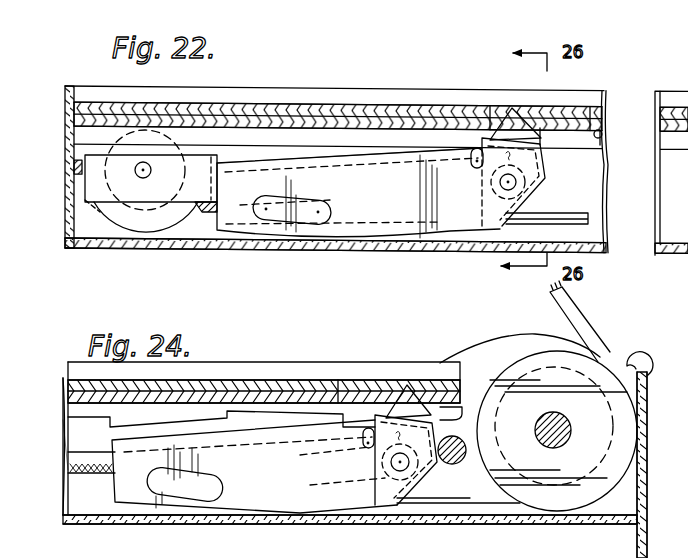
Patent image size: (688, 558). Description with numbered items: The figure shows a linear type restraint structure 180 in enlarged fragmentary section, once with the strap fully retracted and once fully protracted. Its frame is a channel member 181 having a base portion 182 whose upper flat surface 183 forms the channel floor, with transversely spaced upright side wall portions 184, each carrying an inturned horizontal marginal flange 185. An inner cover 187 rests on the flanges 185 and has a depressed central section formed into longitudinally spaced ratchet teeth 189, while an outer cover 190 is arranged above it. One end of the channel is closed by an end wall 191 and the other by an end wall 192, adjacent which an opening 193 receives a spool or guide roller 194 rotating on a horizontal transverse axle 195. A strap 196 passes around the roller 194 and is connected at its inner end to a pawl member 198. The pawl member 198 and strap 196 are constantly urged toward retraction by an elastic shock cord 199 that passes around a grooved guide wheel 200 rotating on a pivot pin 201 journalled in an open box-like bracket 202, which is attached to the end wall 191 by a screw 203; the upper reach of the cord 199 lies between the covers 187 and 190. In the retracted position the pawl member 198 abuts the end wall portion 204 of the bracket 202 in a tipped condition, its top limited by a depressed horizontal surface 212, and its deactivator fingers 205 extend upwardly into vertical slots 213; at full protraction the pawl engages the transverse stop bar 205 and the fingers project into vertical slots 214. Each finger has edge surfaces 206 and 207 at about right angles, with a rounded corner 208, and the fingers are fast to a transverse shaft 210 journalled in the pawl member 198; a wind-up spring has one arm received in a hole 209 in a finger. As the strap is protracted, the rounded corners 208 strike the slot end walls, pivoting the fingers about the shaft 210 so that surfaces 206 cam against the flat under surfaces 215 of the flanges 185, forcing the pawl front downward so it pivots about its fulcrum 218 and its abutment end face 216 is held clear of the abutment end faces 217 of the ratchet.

In FIG. 22, the linear type structure 180 is at (352, 85).
In FIG. 24, the linear type structure 180 is at (279, 361).
In FIG. 22, the channel member 181 is at (366, 250).
In FIG. 24, the channel member 181 is at (411, 527).
In FIG. 22, the base portion 182 is at (405, 248).
In FIG. 24, the base portion 182 is at (497, 526).
In FIG. 22, the upper flat surface 183 is at (239, 240).
In FIG. 24, the upper flat surface 183 is at (377, 516).
In FIG. 24, the side wall portion 184 is at (76, 500).
In FIG. 22, the inturned horizontal marginal flange 185 is at (438, 124).
In FIG. 24, the inturned horizontal marginal flange 185 is at (298, 403).
In FIG. 22, the inner cover 187 is at (384, 116).
In FIG. 24, the inner cover 187 is at (173, 396).
In FIG. 24, the ratchet teeth 189 is at (89, 438).
In FIG. 22, the outer cover 190 is at (277, 103).
In FIG. 24, the outer cover 190 is at (109, 380).
In FIG. 22, the end wall 191 is at (67, 244).
In FIG. 24, the end wall 192 is at (646, 437).
In FIG. 24, the opening 193 is at (470, 361).
In FIG. 24, the guide roller 194 is at (543, 507).
In FIG. 24, the axle 195 is at (553, 412).
In FIG. 22, the strap 196 is at (581, 213).
In FIG. 24, the strap 196 is at (575, 319).
In FIG. 22, the pawl member 198 is at (550, 174).
In FIG. 24, the pawl member 198 is at (430, 479).
In FIG. 22, the elastic shock cord 199 is at (206, 214).
In FIG. 24, the elastic shock cord 199 is at (86, 460).
In FIG. 22, the guide wheel 200 is at (156, 226).
In FIG. 22, the pivot pin 201 is at (151, 178).
In FIG. 22, the bracket 202 is at (106, 205).
In FIG. 22, the screw 203 is at (123, 170).
In FIG. 22, the end wall portion 204 is at (219, 168).
In FIG. 22, the deactivator finger 205 is at (512, 122).
In FIG. 24, the deactivator finger 205 is at (407, 398).
In FIG. 22, the edge surface 206 is at (532, 120).
In FIG. 24, the edge surface 206 is at (441, 406).
In FIG. 22, the edge surface 207 is at (481, 147).
In FIG. 24, the edge surface 207 is at (372, 428).
In FIG. 22, the rounded corner 208 is at (515, 124).
In FIG. 24, the rounded corner 208 is at (408, 401).
In FIG. 22, the hole 209 is at (488, 184).
In FIG. 24, the hole 209 is at (386, 458).
In FIG. 22, the transverse shaft 210 is at (502, 188).
In FIG. 24, the transverse shaft 210 is at (394, 473).
In FIG. 22, the depressed horizontal surface 212 is at (300, 151).
In FIG. 22, the vertical slot 213 is at (498, 102).
In FIG. 24, the vertical slot 214 is at (350, 381).
In FIG. 22, the flat under surface 215 is at (604, 134).
In FIG. 24, the flat under surface 215 is at (160, 410).
In FIG. 22, the abutment end face 216 is at (345, 238).
In FIG. 24, the abutment end face 216 is at (342, 465).
In FIG. 24, the abutment end face 217 is at (226, 420).
In FIG. 24, the fulcrum 218 is at (235, 511).